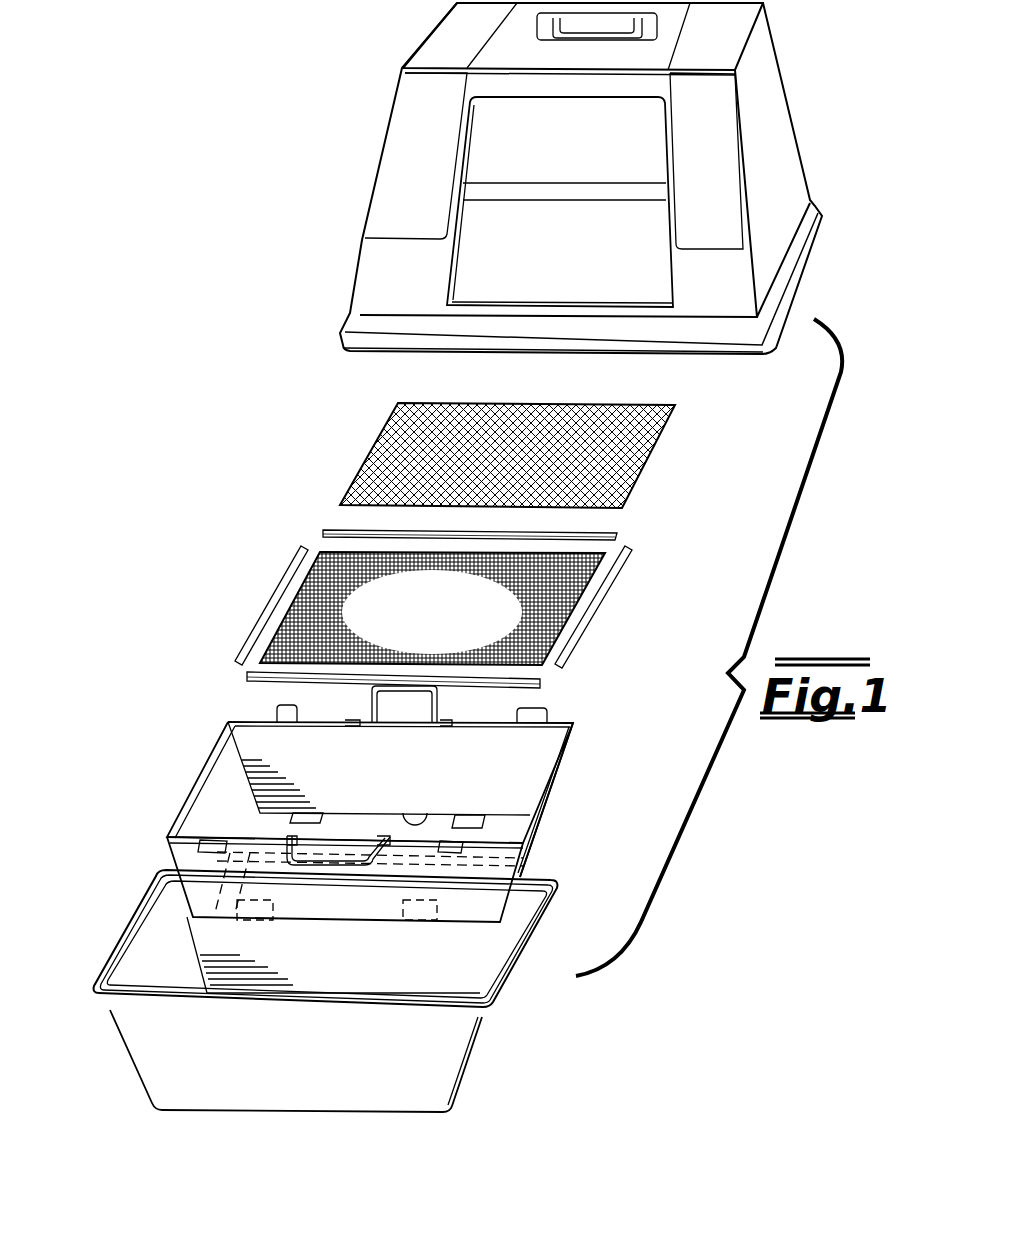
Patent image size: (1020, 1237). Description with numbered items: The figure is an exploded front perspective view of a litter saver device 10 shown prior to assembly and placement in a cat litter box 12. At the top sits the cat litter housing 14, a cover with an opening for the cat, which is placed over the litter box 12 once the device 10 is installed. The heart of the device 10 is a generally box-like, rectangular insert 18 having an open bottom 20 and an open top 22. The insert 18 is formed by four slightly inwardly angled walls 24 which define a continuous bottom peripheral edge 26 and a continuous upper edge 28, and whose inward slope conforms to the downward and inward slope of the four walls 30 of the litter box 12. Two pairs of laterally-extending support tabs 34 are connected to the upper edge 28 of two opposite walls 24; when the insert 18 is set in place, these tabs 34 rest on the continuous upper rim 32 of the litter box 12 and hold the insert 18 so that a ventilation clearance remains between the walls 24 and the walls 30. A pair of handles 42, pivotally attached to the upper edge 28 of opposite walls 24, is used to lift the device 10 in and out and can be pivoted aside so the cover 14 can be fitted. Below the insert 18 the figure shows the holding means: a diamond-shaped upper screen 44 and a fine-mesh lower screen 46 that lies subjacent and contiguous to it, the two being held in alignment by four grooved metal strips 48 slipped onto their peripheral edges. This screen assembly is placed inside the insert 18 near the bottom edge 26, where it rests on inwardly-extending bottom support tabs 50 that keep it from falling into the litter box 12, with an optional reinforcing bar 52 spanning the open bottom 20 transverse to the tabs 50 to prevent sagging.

The litter saver device 10 is at (206, 526).
The cat litter box 12 is at (316, 1116).
The cat litter housing 14 is at (358, 238).
The insert 18 is at (198, 745).
The open bottom 20 is at (520, 838).
The open top 22 is at (178, 830).
The angled walls 24 is at (562, 759).
The bottom peripheral edge 26 is at (427, 812).
The upper edge 28 is at (552, 786).
The walls of the litter box 30 is at (210, 1093).
The upper rim 32 is at (97, 1007).
The support tabs 34 is at (552, 711).
The handles 42 is at (372, 700).
The upper screen 44 is at (655, 440).
The lower screen 46 is at (318, 551).
The metal strips 48 is at (622, 555).
The bottom support tabs 50 is at (313, 817).
The reinforcing bar 52 is at (232, 915).